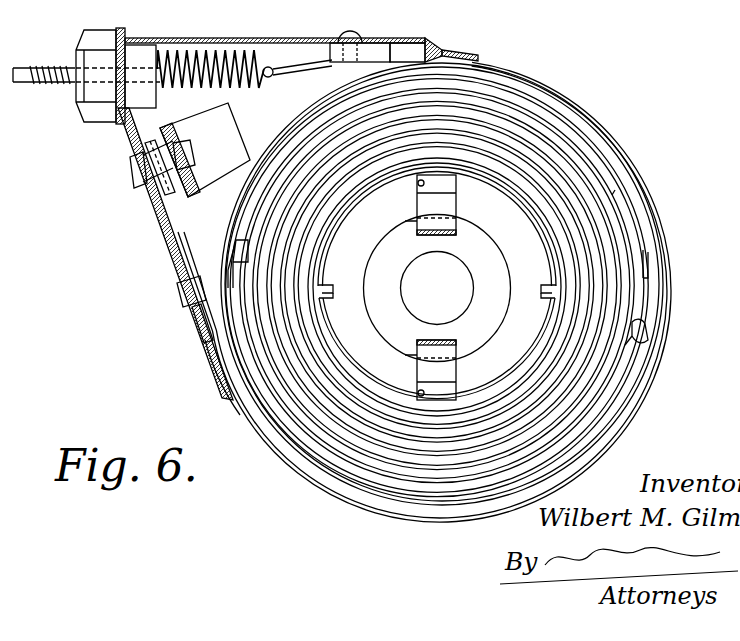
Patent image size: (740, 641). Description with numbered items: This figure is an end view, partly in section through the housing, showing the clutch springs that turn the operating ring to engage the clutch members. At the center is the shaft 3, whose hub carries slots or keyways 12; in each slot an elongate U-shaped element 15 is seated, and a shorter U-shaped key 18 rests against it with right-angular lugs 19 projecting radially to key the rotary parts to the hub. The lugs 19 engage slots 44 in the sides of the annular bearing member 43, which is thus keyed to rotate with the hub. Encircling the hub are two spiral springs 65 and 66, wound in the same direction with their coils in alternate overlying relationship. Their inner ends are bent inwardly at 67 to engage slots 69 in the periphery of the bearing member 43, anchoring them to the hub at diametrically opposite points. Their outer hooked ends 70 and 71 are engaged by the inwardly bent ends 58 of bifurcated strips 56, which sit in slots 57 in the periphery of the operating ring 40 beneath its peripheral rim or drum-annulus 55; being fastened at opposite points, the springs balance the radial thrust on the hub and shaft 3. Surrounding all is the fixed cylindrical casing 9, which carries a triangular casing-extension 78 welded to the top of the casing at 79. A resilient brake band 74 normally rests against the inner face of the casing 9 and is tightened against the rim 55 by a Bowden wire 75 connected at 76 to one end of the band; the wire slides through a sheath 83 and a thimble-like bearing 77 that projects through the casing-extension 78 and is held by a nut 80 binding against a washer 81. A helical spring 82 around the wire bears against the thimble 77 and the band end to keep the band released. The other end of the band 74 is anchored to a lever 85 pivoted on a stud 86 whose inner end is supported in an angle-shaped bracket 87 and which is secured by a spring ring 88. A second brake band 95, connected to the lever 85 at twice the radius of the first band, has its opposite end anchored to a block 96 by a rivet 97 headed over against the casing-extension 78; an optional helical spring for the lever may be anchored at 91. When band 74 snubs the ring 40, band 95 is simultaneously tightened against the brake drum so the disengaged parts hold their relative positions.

The shaft 3 is at (437, 288).
The casing 9 is at (583, 108).
The slot or keyway 12 is at (417, 224).
The U-shaped element 15 is at (445, 234).
The key 18 is at (445, 220).
The lug 19 is at (436, 287).
The operating ring 40 is at (482, 105).
The bearing member 43 is at (437, 287).
The slot 44 is at (418, 184).
The rim or drum-annulus 55 is at (540, 94).
The bifurcated strip 56 is at (643, 273).
The slot 57 is at (648, 252).
The inwardly bent end 58 is at (648, 330).
The spiral spring 65 is at (612, 195).
The spiral spring 66 is at (246, 393).
The inwardly bent end 67 is at (330, 296).
The slot 69 is at (350, 278).
The hooked end 70 is at (640, 340).
The hooked end 71 is at (246, 240).
The brake band 74 is at (305, 68).
The Bowden wire 75 is at (24, 66).
The connection 76 is at (272, 68).
The thimble-like bearing 77 is at (140, 76).
The casing-extension 78 is at (282, 38).
The weld 79 is at (462, 52).
The nut 80 is at (96, 34).
The washer 81 is at (122, 30).
The helical spring 82 is at (216, 50).
The sheath 83 is at (44, 86).
The lever 85 is at (148, 142).
The stud 86 is at (133, 177).
The angle-shaped bracket 87 is at (168, 128).
The spring ring 88 is at (150, 180).
The anchor point 91 is at (192, 318).
The brake band 95 is at (388, 43).
The block 96 is at (414, 43).
The rivet 97 is at (352, 32).